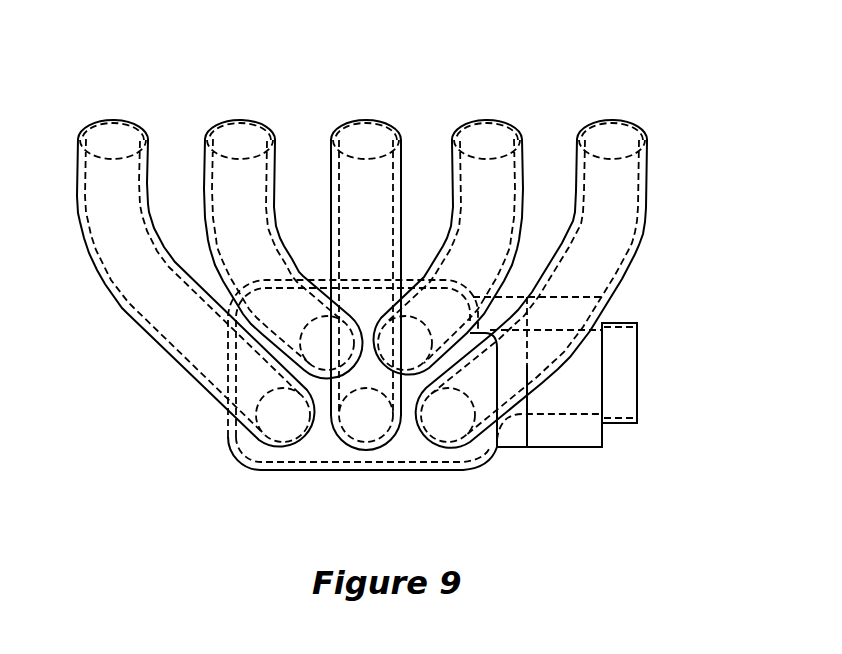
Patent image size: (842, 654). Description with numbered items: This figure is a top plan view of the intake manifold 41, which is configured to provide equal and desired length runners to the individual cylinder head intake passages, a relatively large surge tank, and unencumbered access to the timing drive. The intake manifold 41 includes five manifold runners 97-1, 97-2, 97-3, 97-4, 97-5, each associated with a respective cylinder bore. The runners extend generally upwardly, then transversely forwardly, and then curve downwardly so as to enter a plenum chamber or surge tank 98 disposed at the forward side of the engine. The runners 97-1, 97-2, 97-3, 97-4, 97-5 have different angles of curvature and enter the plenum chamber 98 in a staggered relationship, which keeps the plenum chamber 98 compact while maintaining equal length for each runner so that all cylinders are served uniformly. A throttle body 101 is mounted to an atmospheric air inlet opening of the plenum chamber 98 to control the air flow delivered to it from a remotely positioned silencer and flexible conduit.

The intake manifold 41 is at (647, 62).
The manifold runner 97-1 is at (147, 188).
The manifold runner 97-2 is at (277, 178).
The manifold runner 97-3 is at (400, 170).
The manifold runner 97-4 is at (523, 170).
The manifold runner 97-5 is at (653, 173).
The plenum chamber 98 is at (470, 471).
The throttle body 101 is at (577, 448).